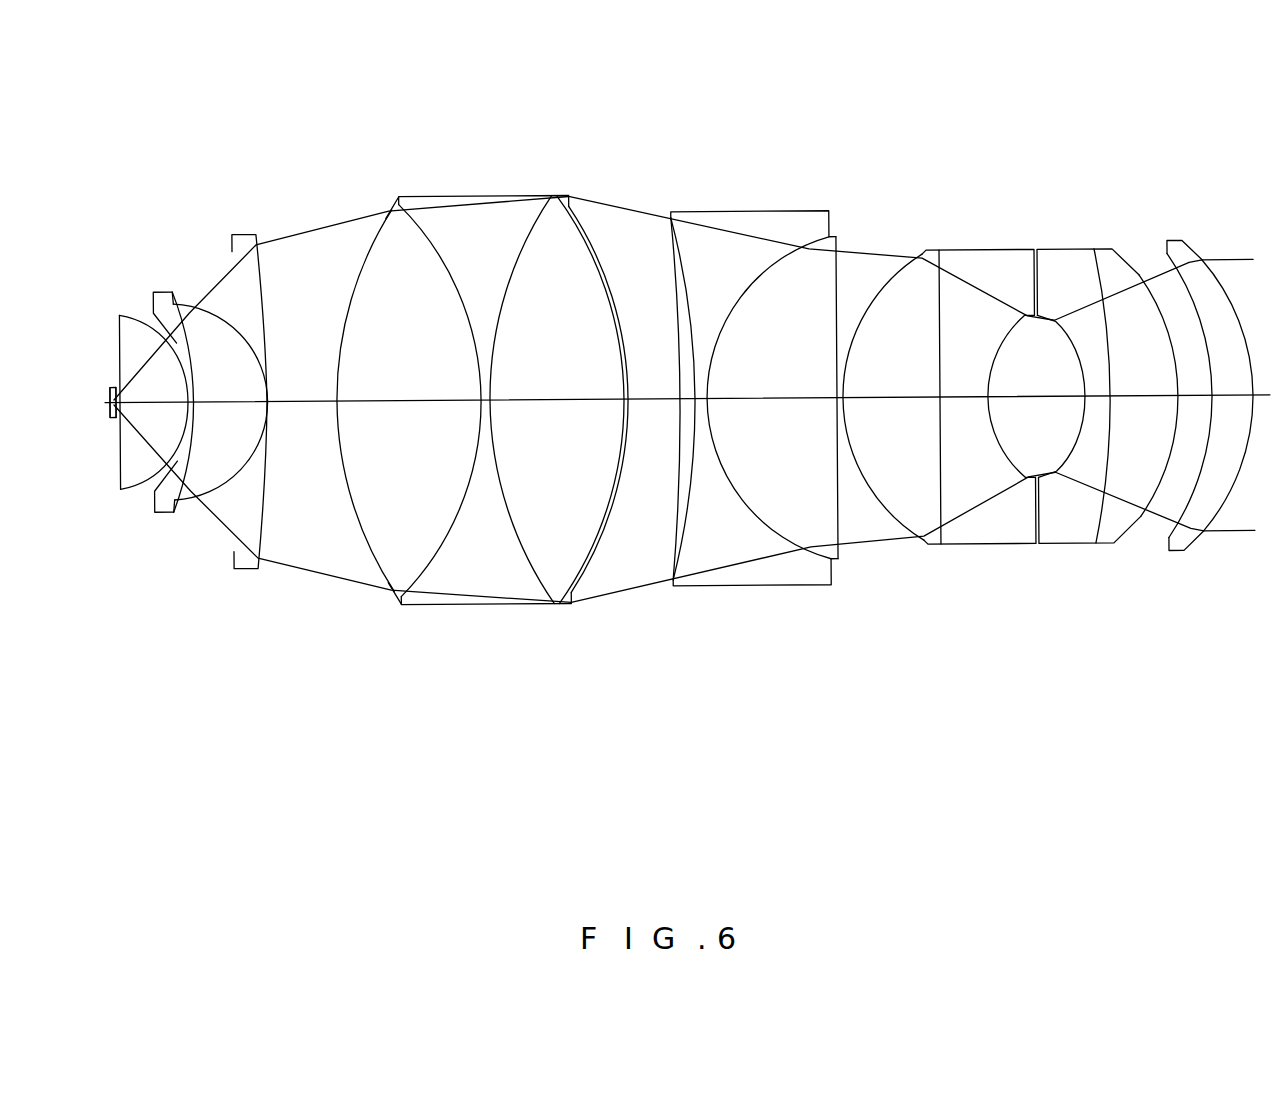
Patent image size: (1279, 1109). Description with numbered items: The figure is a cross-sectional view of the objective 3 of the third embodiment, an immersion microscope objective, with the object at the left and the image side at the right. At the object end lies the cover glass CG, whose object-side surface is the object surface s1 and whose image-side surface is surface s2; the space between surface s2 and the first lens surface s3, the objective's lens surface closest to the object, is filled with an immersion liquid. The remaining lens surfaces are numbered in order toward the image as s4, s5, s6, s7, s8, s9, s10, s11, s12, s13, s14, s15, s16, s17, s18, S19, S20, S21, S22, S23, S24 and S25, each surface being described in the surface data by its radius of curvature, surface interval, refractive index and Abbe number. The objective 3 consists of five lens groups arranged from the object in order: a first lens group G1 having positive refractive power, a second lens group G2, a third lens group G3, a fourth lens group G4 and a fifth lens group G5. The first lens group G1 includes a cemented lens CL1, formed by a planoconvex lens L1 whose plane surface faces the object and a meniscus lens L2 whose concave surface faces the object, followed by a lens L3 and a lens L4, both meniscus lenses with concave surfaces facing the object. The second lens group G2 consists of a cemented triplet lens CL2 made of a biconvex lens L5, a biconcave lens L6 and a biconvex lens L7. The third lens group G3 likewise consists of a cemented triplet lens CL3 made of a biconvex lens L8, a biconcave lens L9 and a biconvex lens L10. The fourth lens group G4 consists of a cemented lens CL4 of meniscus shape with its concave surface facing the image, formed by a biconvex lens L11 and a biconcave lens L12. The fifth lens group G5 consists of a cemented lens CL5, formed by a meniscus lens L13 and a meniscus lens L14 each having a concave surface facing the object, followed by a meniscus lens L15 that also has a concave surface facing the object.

The objective 3 is at (1260, 49).
The cover glass CG is at (110, 413).
The object surface s1 is at (108, 393).
The surface of the cover glass on the image side s2 is at (114, 386).
The lens surface closest to the object s3 is at (122, 386).
The surface number s4 is at (128, 386).
The surface number s5 is at (177, 342).
The surface number s6 is at (190, 322).
The surface number s7 is at (230, 315).
The surface number s8 is at (252, 298).
The surface number s9 is at (309, 293).
The surface number s10 is at (354, 290).
The surface number s11 is at (462, 290).
The surface number s12 is at (502, 287).
The surface number s13 is at (610, 283).
The surface number s14 is at (638, 290).
The surface number s15 is at (695, 287).
The surface number s16 is at (743, 290).
The surface number s17 is at (843, 300).
The surface number s18 is at (868, 300).
The surface number S19 is at (948, 322).
The surface number S20 is at (1023, 310).
The surface number S21 is at (1066, 340).
The surface number S22 is at (1104, 310).
The surface number S23 is at (1136, 272).
The surface number S24 is at (1189, 292).
The surface number S25 is at (1227, 288).
The lens L1 is at (148, 452).
The lens L2 is at (168, 470).
The lens L3 is at (232, 463).
The lens L4 is at (308, 530).
The biconvex lens L5 is at (400, 545).
The biconcave lens L6 is at (490, 545).
The biconvex lens L7 is at (560, 545).
The biconvex lens L8 is at (687, 545).
The biconcave lens L9 is at (723, 525).
The biconvex lens L10 is at (805, 590).
The biconvex lens L11 is at (920, 520).
The biconcave lens L12 is at (997, 525).
The meniscus lens L13 is at (1055, 525).
The meniscus lens L14 is at (1117, 520).
The meniscus lens L15 is at (1200, 520).
The cemented lens CL1 is at (122, 664).
The cemented triplet lens CL2 is at (392, 664).
The cemented triplet lens CL3 is at (825, 664).
The cemented lens CL4 is at (873, 664).
The cemented lens CL5 is at (1175, 664).
The first lens group G1 is at (117, 713).
The second lens group G2 is at (387, 713).
The third lens group G3 is at (642, 713).
The fourth lens group G4 is at (1037, 713).
The fifth lens group G5 is at (1043, 713).